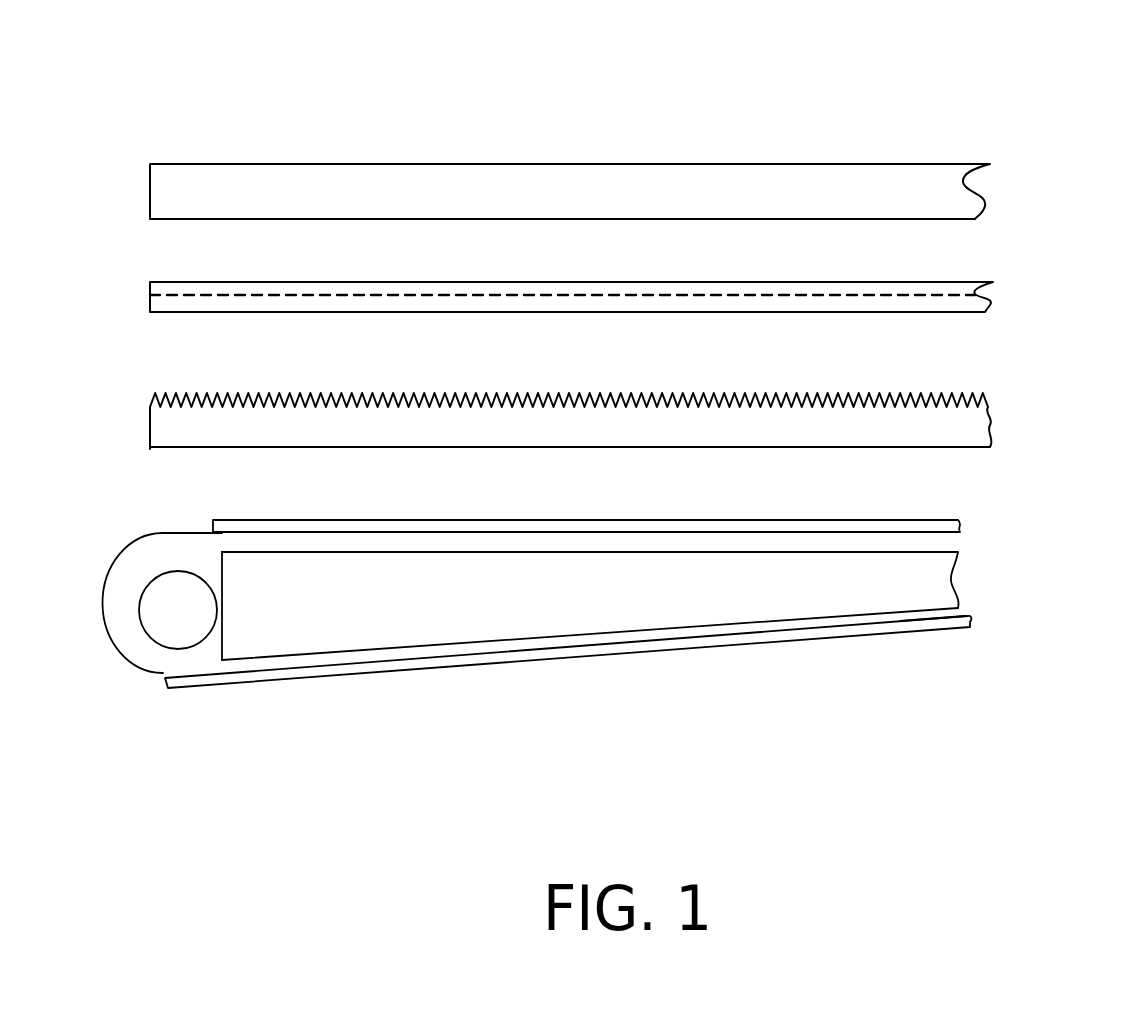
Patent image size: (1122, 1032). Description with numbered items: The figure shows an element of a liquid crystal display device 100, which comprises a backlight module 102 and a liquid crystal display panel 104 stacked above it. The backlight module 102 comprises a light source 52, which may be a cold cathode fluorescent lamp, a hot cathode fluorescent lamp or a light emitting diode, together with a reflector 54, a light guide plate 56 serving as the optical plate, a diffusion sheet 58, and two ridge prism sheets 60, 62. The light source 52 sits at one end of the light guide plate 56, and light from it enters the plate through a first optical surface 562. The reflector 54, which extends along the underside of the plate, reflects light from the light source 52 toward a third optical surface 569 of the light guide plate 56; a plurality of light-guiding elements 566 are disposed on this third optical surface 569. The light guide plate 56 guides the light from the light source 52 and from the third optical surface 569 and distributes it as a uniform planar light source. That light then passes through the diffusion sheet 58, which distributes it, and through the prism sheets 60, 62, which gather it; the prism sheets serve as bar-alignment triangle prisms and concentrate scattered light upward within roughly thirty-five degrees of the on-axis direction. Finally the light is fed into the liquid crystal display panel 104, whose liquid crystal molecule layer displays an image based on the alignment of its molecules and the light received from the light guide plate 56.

The liquid crystal display device 100 is at (612, 52).
The liquid crystal display panel 104 is at (917, 195).
The ridge prism sheet 62 is at (945, 295).
The ridge prism sheet 60 is at (942, 428).
The diffusion sheet 58 is at (910, 527).
The light guide plate 56 is at (930, 588).
The light-guiding elements 566 is at (228, 552).
The first optical surface 562 is at (222, 652).
The third optical surface 569 is at (368, 650).
The light source 52 is at (178, 609).
The reflector 54 is at (520, 652).
The backlight module 102 is at (934, 643).